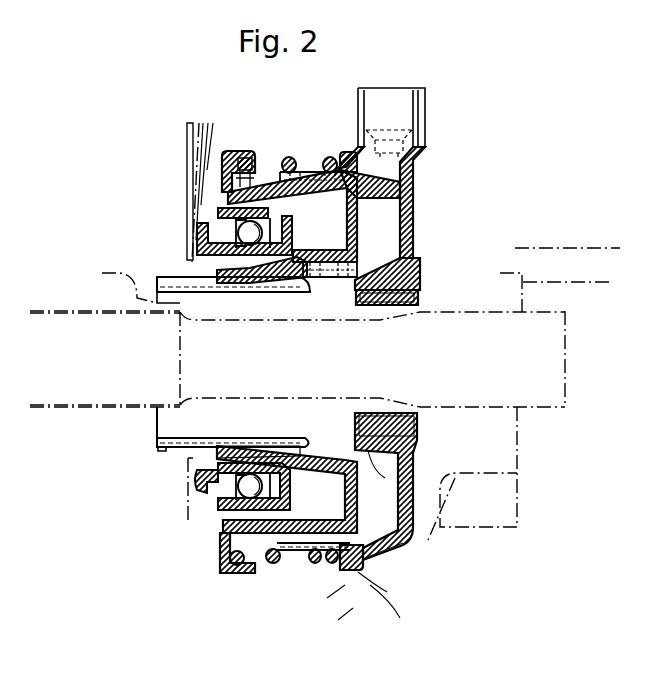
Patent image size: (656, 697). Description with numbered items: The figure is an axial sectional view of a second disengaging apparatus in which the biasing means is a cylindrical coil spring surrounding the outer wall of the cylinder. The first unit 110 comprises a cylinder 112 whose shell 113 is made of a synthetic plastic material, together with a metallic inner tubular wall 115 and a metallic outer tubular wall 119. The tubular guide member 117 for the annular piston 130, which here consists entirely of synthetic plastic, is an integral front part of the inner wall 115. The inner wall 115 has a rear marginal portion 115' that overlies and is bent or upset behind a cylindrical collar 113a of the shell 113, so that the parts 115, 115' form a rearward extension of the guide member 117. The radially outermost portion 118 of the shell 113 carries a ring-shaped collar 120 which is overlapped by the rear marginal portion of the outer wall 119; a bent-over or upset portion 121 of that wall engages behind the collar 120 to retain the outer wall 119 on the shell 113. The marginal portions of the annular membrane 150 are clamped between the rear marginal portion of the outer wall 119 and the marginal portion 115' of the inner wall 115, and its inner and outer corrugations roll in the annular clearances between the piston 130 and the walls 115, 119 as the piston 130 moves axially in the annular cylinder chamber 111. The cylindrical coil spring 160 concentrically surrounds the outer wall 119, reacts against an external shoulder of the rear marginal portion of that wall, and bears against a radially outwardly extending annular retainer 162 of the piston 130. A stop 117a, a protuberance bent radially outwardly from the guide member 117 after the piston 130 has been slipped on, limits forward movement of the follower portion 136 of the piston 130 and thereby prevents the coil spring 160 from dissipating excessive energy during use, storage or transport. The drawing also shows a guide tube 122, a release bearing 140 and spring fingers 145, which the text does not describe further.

The first unit 110 is at (418, 509).
The annular cylinder chamber 111 is at (406, 531).
The cylinder 112 is at (415, 206).
The shell 113 is at (414, 252).
The cylindrical portion or collar 113a is at (419, 295).
The inner tubular wall 115 is at (376, 491).
The rear marginal portion 115' is at (421, 423).
The tubular guide member 117 is at (181, 443).
The stop 117a is at (158, 448).
The radially outermost portion 118 is at (387, 526).
The outer tubular wall 119 is at (297, 551).
The ring-shaped collar 120 is at (354, 573).
The bent-over or upset portion 121 is at (364, 572).
The guide tube 122 is at (426, 114).
The annular piston 130 is at (268, 184).
The follower portion 136 is at (241, 290).
The release bearing 140 is at (222, 514).
The diaphragm spring fingers 145 is at (186, 173).
The annular membrane 150 is at (337, 278).
The cylindrical coil spring 160 is at (272, 567).
The retainer 162 is at (220, 152).